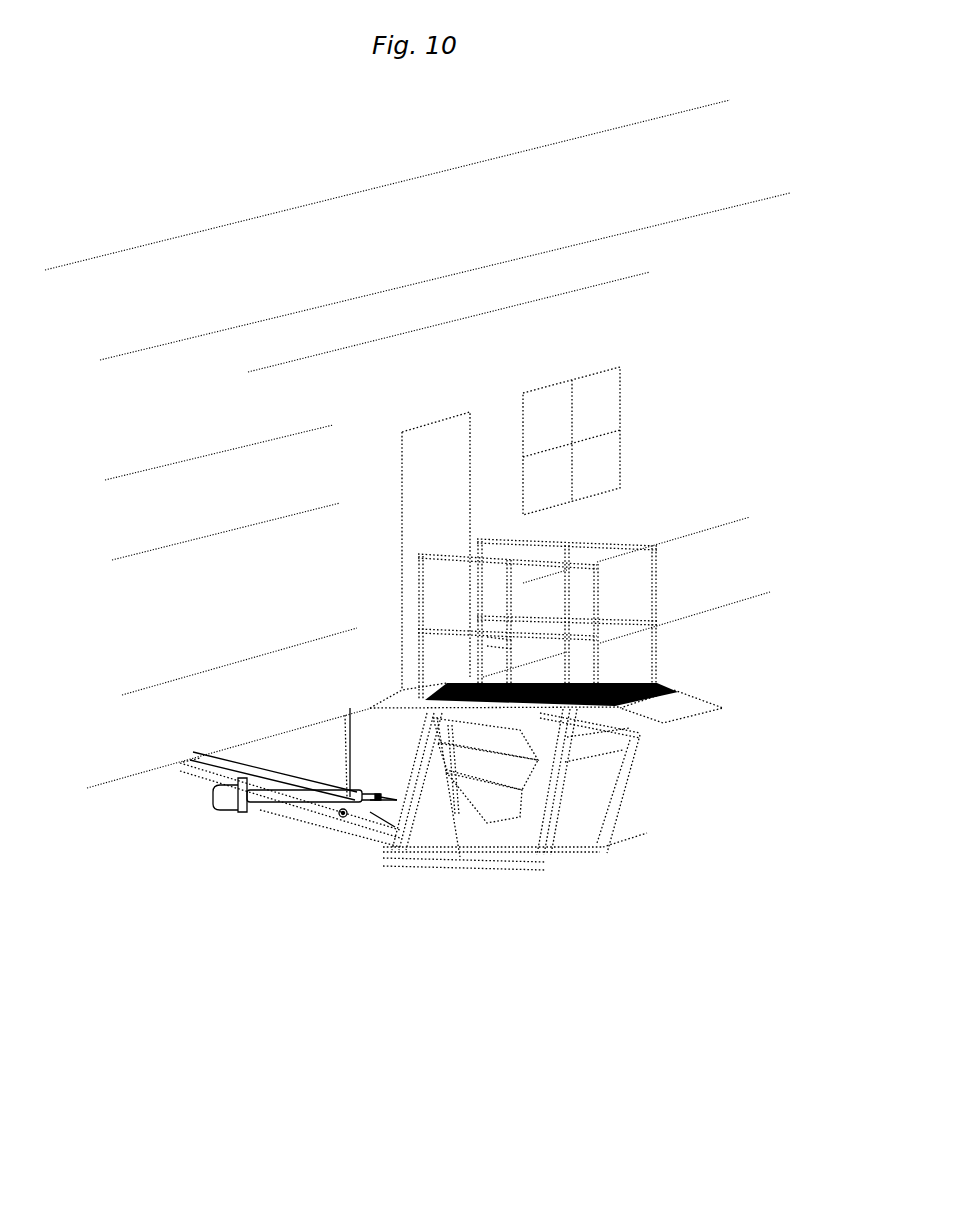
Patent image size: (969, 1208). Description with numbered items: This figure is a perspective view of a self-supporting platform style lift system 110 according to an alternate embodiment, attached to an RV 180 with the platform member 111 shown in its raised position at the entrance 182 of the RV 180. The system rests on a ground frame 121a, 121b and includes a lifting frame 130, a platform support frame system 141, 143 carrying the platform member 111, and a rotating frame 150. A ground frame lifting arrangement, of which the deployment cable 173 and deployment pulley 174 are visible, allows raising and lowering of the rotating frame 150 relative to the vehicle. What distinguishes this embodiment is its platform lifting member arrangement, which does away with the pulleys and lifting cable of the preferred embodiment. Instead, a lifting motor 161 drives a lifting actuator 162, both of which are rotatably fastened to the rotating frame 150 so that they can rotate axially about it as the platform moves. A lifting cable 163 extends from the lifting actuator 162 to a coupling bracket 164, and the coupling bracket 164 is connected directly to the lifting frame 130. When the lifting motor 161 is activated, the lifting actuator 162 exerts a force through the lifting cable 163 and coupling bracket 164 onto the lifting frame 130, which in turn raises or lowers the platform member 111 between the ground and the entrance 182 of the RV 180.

The self-supporting platform style lift system 110 is at (728, 967).
The platform member 111 is at (618, 707).
The ground frame 121a is at (420, 805).
The ground frame 121b is at (458, 812).
The lifting frame 130 is at (343, 818).
The platform support frame system 141 is at (493, 857).
The platform support frame system 143 is at (540, 823).
The rotating frame 150 is at (188, 776).
The lifting motor 161 is at (237, 803).
The lifting actuator 162 is at (287, 793).
The lifting cable 163 is at (265, 752).
The coupling bracket 164 is at (377, 795).
The deployment cable 173 is at (348, 750).
The deployment pulley 174 is at (393, 835).
The RV 180 is at (187, 277).
The entrance 182 is at (435, 443).